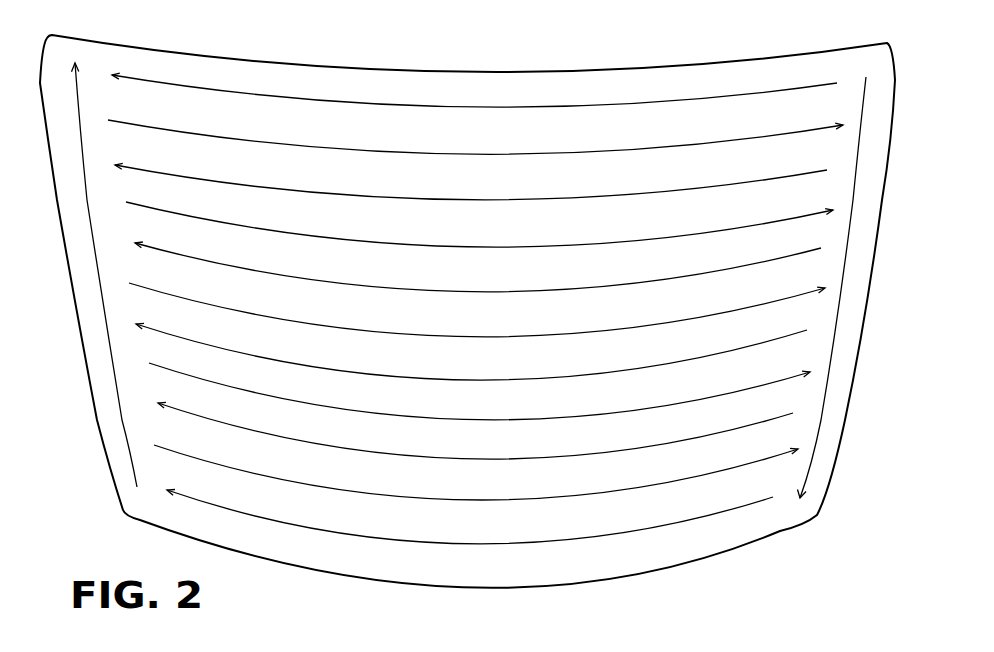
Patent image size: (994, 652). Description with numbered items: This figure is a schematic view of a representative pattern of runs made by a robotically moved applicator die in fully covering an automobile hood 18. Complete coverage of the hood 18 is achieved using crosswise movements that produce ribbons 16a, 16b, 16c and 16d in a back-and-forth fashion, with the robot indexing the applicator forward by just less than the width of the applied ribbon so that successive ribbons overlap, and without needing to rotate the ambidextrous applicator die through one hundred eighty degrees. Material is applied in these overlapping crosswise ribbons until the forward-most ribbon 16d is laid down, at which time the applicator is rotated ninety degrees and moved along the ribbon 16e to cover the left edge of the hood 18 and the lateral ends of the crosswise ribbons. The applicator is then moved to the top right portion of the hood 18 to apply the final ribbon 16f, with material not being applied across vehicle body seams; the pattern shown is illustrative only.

The hood 18 is at (878, 228).
The ribbon 16a is at (438, 107).
The ribbon 16b is at (575, 150).
The ribbon 16c is at (232, 180).
The ribbon 16d is at (445, 543).
The ribbon 16e is at (125, 438).
The ribbon 16f is at (820, 415).